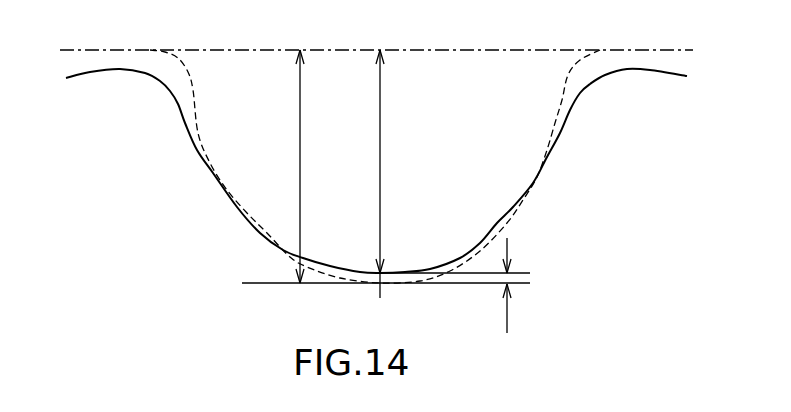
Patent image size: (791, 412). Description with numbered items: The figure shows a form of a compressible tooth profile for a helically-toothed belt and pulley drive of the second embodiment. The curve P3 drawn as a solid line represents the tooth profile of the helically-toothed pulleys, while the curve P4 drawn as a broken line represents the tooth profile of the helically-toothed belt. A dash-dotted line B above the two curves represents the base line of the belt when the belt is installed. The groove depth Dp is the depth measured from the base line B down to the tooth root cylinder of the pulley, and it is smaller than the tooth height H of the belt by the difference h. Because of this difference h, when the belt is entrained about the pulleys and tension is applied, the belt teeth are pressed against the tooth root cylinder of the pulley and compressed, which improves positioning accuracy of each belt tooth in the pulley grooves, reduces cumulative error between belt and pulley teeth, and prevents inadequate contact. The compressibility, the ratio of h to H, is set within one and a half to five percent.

The base line of the belt B is at (498, 45).
The tooth profile of the helically-toothed pulleys P3 is at (177, 101).
The tooth profile of the helically-toothed belt P4 is at (196, 97).
The tooth height of the belt H is at (386, 166).
The groove depth Dp is at (365, 174).
The depth difference h is at (463, 285).